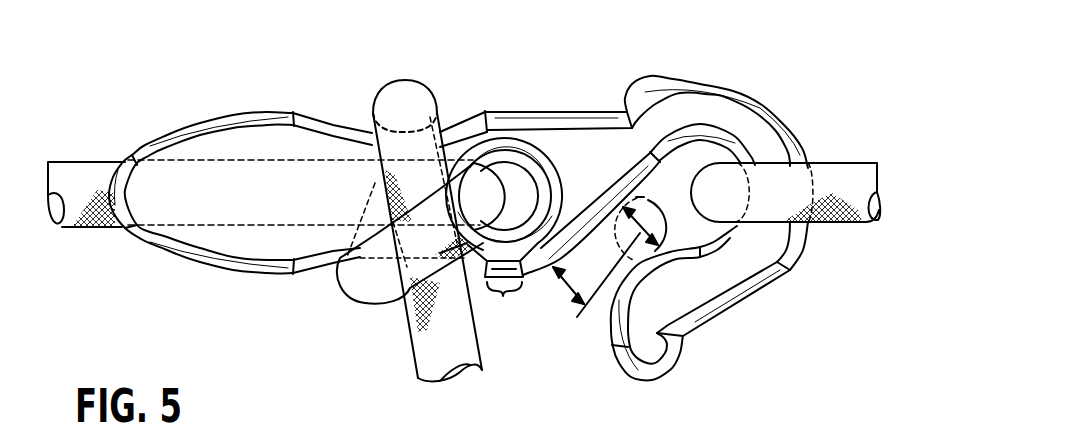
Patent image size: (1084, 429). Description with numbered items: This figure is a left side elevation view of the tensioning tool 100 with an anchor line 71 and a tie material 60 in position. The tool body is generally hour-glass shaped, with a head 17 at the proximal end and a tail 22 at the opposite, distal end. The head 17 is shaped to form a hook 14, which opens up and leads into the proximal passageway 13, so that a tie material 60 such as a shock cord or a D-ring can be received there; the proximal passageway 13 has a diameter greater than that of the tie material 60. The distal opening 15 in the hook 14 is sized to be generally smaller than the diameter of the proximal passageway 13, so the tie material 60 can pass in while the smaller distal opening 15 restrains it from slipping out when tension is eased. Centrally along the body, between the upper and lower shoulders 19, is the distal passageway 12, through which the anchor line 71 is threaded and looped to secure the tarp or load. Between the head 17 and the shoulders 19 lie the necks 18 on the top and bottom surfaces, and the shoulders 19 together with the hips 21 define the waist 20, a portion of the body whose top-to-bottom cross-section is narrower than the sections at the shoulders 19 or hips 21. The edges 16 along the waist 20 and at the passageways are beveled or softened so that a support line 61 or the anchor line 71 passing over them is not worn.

The tensioning tool 100 is at (186, 101).
The anchor line 71 is at (97, 162).
The edge 16 is at (213, 257).
The waist 20 is at (333, 125).
The hip 21 is at (298, 110).
The tail 22 is at (205, 211).
The distal passageway 12 is at (518, 170).
The shoulder 19 is at (485, 112).
The distal opening 15 is at (620, 230).
The neck 18 is at (673, 170).
The head 17 is at (775, 105).
The hook 14 is at (773, 233).
The proximal passageway 13 is at (683, 210).
The tie material 60 is at (860, 163).
The support line 61 is at (830, 160).